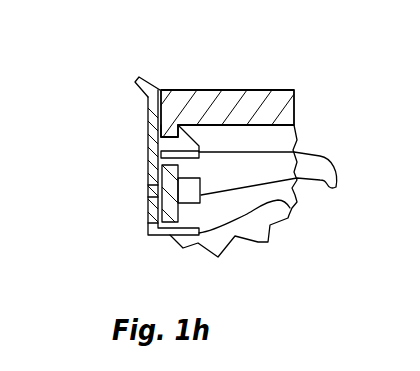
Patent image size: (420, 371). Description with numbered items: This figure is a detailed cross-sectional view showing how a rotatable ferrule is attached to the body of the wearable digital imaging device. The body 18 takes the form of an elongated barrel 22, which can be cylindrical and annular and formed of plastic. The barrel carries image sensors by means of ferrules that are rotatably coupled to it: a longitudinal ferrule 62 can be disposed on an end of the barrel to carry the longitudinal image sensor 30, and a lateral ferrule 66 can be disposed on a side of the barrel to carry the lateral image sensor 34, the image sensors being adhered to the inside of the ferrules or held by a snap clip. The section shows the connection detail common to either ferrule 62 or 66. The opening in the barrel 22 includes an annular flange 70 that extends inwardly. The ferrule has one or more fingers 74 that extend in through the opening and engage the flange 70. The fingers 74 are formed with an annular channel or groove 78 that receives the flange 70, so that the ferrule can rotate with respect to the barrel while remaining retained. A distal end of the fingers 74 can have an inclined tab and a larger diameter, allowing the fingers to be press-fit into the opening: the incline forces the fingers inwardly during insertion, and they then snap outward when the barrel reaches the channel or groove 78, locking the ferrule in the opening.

The body 18 is at (215, 90).
The barrel 22 is at (280, 90).
The longitudinal image sensor 30 is at (128, 168).
The lateral image sensor 34 is at (170, 210).
The longitudinal ferrule 62 is at (108, 106).
The lateral ferrule 66 is at (131, 77).
The annular flange 70 is at (168, 132).
The fingers 74 is at (279, 183).
The annular channel or groove 78 is at (173, 141).